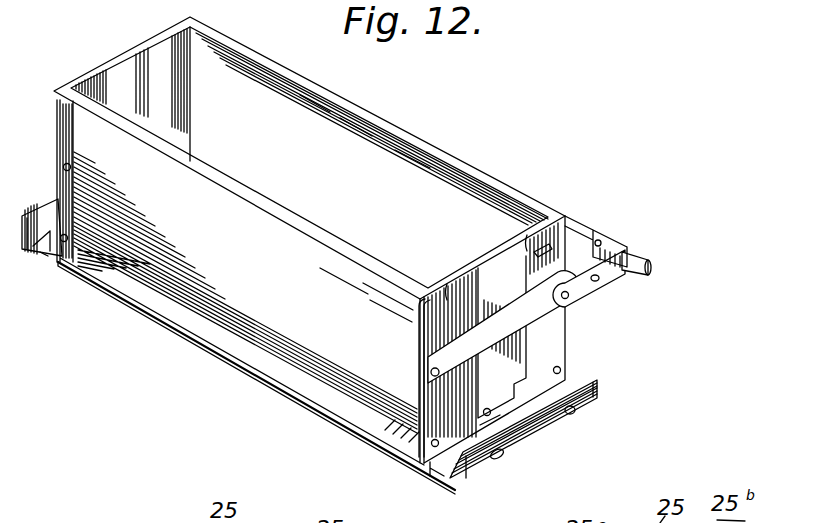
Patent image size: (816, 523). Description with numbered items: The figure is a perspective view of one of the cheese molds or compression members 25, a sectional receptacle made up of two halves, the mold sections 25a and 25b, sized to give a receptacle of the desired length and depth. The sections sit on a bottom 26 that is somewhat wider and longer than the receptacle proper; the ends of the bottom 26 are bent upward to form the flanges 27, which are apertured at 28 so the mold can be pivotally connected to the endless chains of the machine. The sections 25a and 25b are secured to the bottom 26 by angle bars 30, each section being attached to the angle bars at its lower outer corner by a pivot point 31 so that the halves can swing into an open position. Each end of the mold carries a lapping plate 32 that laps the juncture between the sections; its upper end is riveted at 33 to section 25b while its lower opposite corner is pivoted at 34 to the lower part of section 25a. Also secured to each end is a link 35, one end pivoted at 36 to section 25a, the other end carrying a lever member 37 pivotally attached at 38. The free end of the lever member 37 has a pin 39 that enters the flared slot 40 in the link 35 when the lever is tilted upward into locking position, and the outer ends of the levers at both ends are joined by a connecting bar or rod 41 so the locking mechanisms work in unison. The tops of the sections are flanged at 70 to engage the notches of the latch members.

The cheese mold 25 is at (96, 55).
The mold section 25a is at (233, 231).
The mold section 25b is at (463, 178).
The bottom 26 is at (223, 362).
The flange 27 is at (32, 212).
The aperture 28 is at (573, 413).
The angle bar 30 is at (41, 258).
The pivot point 31 is at (58, 272).
The lapping plate 32 is at (503, 372).
The rivet 33 is at (540, 252).
The pivot 34 is at (486, 418).
The link 35 is at (420, 333).
The pivot 36 is at (430, 372).
The lever member 37 is at (590, 288).
The pivot 38 is at (624, 276).
The pin 39 is at (567, 299).
The flared slot 40 is at (560, 270).
The connecting bar 41 is at (548, 226).
The flange 70 is at (449, 282).